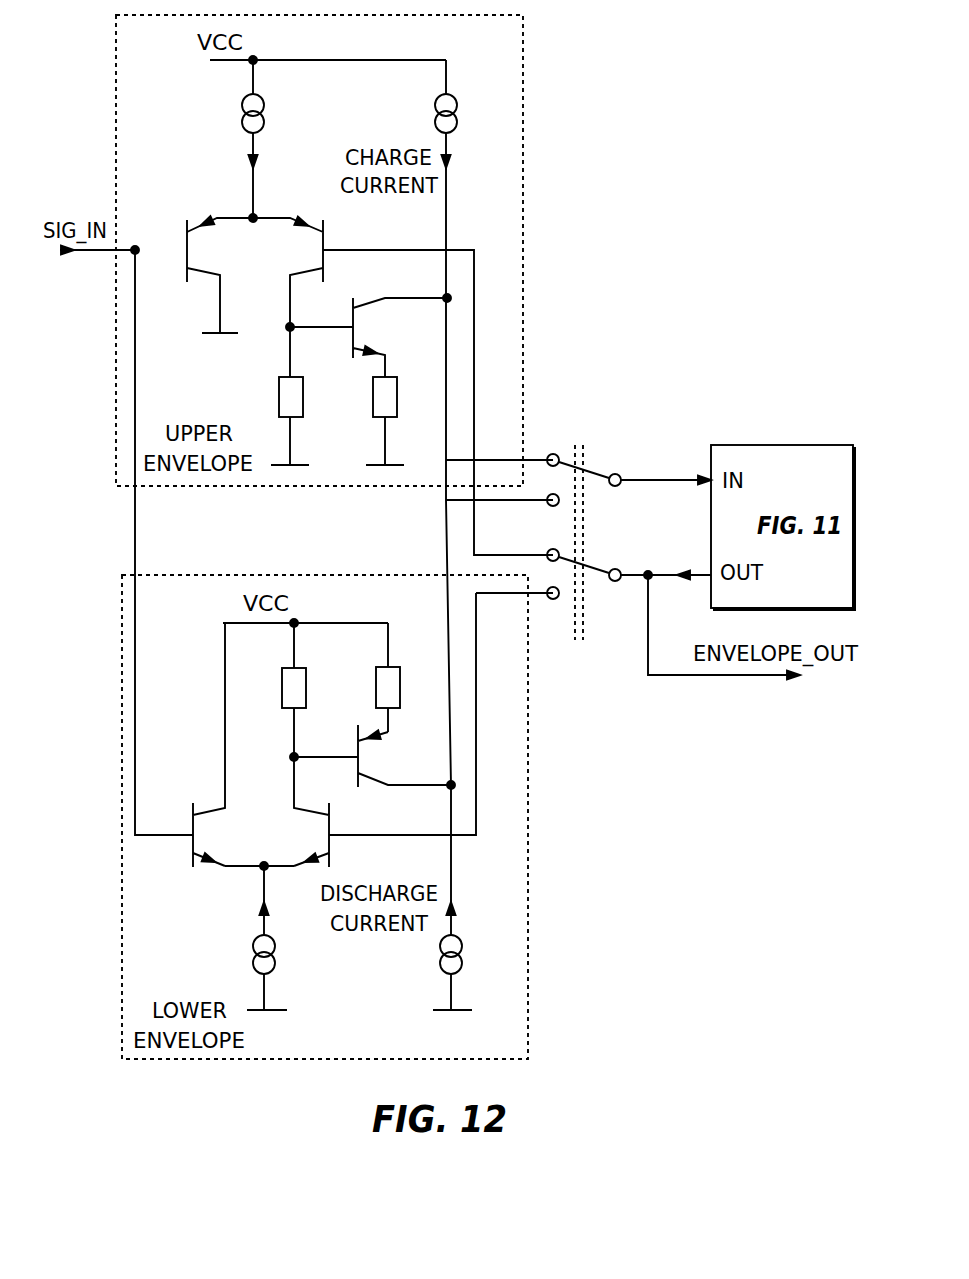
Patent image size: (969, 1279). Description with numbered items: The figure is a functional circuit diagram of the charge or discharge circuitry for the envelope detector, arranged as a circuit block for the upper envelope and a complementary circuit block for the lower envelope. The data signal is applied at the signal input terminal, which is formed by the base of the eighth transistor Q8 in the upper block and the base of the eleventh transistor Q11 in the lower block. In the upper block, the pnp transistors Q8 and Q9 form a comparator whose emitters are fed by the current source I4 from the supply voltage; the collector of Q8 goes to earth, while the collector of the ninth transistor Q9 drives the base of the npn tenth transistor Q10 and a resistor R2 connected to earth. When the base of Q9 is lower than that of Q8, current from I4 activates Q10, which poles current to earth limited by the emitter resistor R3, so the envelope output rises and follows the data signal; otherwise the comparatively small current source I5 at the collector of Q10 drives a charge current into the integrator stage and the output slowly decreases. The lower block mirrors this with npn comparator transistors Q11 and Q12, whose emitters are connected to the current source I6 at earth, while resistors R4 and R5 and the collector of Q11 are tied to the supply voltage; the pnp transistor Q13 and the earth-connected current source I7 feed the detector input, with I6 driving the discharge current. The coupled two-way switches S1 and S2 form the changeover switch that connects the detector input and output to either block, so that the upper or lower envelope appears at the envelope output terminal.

The current source I4 is at (268, 139).
The current source I5 is at (459, 265).
The current source I6 is at (276, 938).
The current source I7 is at (462, 897).
The eighth transistor Q8 is at (220, 274).
The ninth transistor Q9 is at (288, 272).
The tenth transistor Q10 is at (368, 337).
The eleventh transistor Q11 is at (217, 745).
The transistor Q12 is at (302, 812).
The transistor Q13 is at (372, 756).
The resistor R2 is at (304, 396).
The resistor R3 is at (399, 421).
The resistor R4 is at (312, 690).
The resistor R5 is at (405, 677).
The two-way switch S1 is at (629, 530).
The two-way switch S2 is at (629, 565).